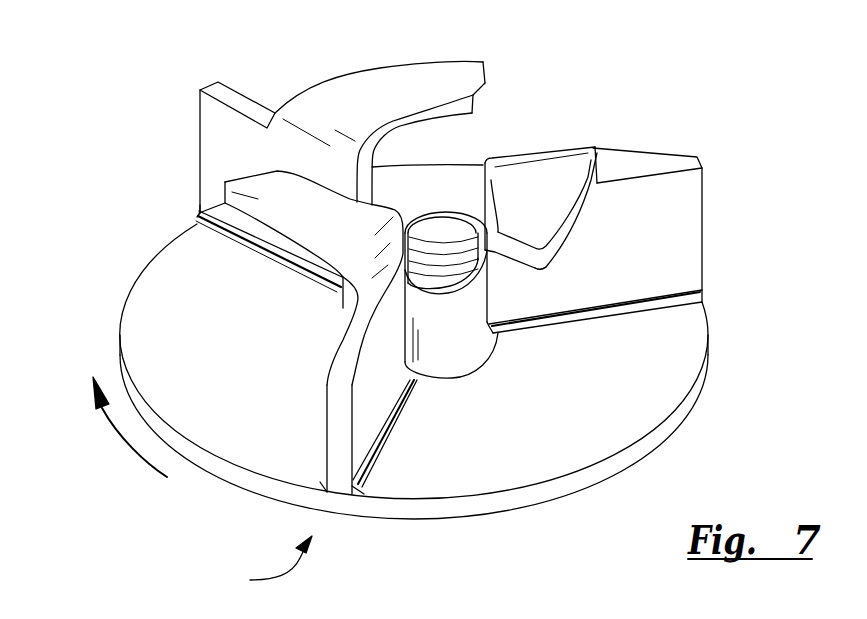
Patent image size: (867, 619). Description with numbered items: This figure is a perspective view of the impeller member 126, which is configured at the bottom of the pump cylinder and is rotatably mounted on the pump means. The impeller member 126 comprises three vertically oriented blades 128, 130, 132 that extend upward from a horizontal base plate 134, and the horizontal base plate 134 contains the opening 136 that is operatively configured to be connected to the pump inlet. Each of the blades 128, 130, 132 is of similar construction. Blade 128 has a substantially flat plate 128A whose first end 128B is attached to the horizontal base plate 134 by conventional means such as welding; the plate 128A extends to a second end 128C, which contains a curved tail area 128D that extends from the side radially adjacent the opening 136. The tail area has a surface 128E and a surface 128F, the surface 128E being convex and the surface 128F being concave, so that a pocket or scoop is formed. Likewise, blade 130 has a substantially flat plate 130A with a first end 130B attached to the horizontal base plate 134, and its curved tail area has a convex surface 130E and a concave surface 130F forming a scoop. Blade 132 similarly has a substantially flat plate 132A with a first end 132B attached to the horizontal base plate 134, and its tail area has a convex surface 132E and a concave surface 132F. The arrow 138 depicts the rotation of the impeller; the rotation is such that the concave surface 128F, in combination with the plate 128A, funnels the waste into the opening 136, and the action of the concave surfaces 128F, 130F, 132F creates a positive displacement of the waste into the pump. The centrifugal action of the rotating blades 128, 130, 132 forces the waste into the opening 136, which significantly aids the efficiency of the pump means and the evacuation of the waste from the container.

The impeller member 126 is at (256, 565).
The blade 128 is at (284, 132).
The substantially flat plate 128A is at (230, 160).
The first end 128B is at (197, 216).
The second end 128C is at (218, 88).
The curved tail area 128D is at (310, 108).
The convex surface 128E is at (390, 78).
The concave surface 128F is at (453, 116).
The blade 130 is at (331, 379).
The substantially flat plate 130A is at (357, 403).
The first end 130B is at (410, 393).
The convex surface 130E is at (257, 197).
The concave surface 130F is at (233, 225).
The blade 132 is at (659, 200).
The substantially flat plate 132A is at (688, 213).
The first end 132B is at (700, 302).
The convex surface 132E is at (547, 217).
The concave surface 132F is at (520, 270).
The horizontal base plate 134 is at (667, 403).
The opening 136 is at (490, 283).
The arrow 138 is at (123, 443).